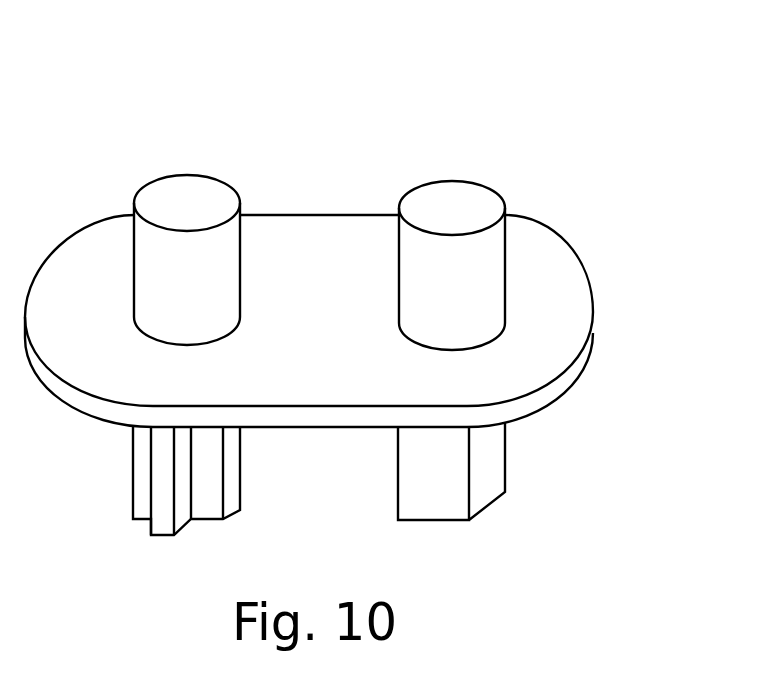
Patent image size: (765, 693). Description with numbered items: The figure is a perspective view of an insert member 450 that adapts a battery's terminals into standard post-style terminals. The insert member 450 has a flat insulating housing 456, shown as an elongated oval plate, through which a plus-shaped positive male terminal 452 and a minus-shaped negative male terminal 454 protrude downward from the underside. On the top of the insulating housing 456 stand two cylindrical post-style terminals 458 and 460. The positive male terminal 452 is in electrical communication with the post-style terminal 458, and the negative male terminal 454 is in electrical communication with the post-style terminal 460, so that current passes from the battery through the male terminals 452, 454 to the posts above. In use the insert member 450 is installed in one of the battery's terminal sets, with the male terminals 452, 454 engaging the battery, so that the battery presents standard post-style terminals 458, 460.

The insert member 450 is at (587, 98).
The positive male terminal 452 is at (133, 473).
The negative male terminal 454 is at (492, 470).
The insulating housing 456 is at (540, 275).
The post-style terminal 458 is at (181, 193).
The post-style terminal 460 is at (465, 198).